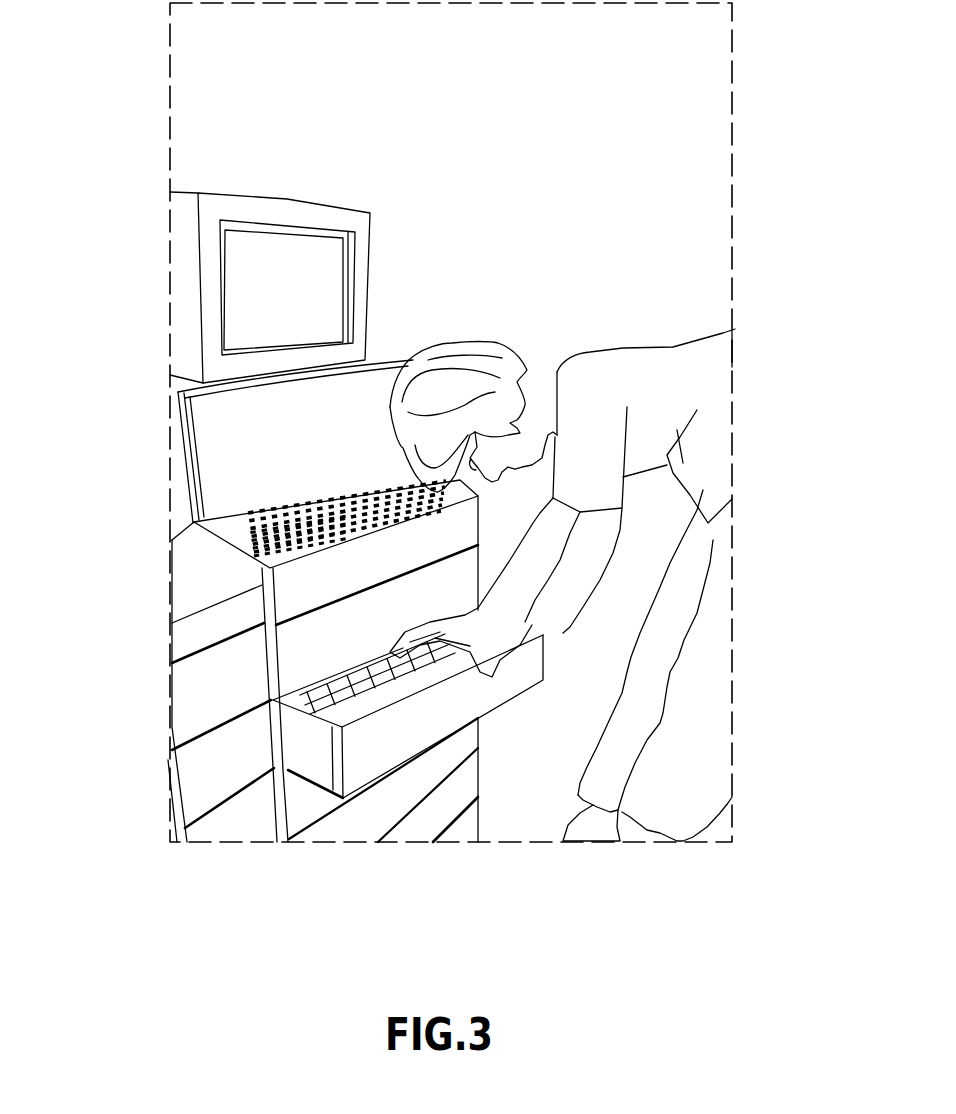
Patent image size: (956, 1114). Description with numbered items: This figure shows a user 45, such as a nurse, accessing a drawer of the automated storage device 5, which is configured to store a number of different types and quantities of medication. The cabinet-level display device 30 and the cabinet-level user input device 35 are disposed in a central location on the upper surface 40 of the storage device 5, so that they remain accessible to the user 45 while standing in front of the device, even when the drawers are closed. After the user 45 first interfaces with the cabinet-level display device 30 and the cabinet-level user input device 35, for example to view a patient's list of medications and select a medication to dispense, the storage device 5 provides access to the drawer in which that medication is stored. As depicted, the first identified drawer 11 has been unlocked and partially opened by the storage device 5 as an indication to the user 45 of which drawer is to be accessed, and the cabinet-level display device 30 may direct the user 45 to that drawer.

The automated storage device 5 is at (133, 120).
The cabinet-level display device 30 is at (242, 295).
The cabinet-level user input device 35 is at (270, 510).
The upper surface 40 is at (203, 585).
The first identified drawer 11 is at (353, 717).
The user 45 is at (583, 376).